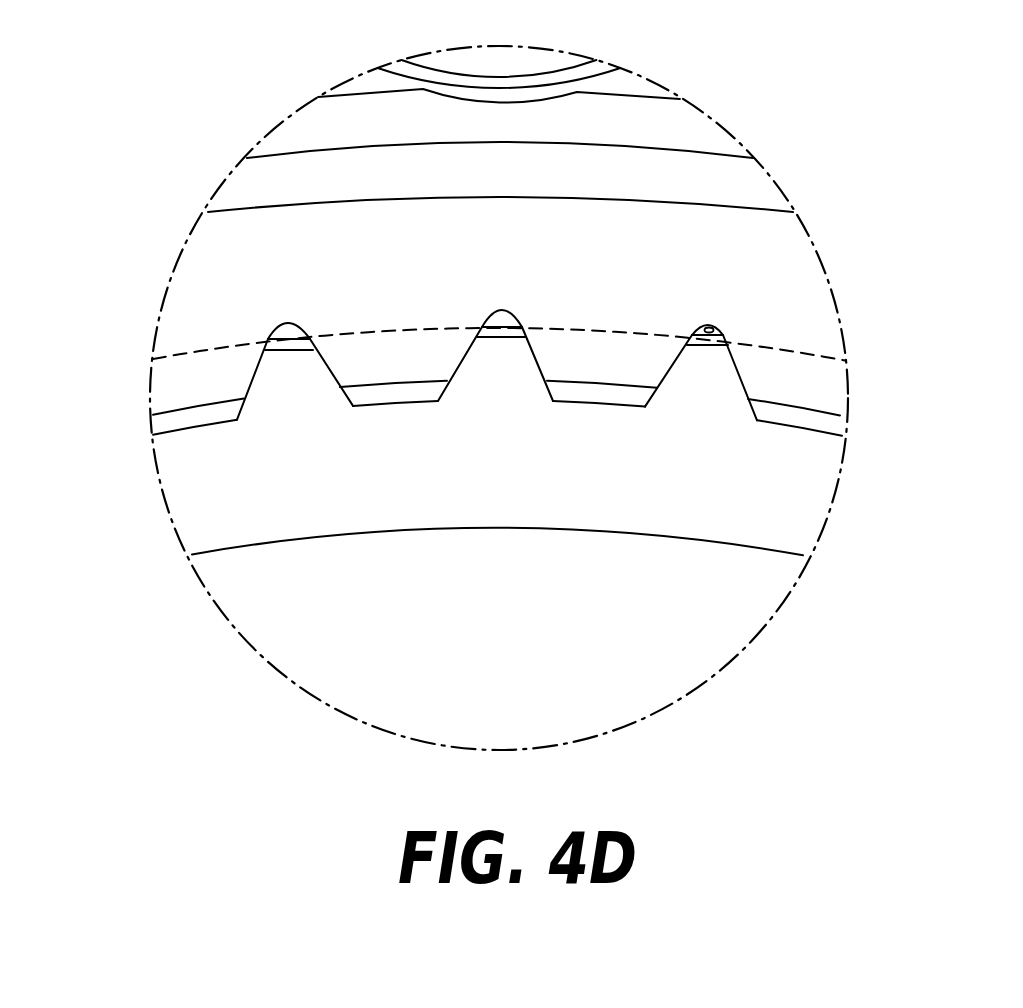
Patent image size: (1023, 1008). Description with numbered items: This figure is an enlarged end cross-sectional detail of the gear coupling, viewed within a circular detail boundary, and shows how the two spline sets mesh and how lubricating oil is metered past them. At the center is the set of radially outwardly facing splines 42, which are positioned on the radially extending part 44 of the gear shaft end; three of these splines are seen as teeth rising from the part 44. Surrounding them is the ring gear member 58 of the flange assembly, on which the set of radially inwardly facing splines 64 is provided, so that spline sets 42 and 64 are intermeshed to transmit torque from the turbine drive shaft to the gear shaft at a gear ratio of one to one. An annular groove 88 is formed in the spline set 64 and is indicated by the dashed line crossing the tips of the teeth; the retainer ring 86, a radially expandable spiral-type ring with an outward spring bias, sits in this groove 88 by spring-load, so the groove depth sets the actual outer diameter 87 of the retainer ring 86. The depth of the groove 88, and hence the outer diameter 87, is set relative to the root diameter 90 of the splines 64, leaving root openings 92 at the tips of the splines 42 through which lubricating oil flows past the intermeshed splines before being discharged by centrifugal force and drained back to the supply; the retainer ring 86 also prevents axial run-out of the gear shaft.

The outwardly facing splines 42 is at (277, 389).
The radially extending part 44 is at (193, 478).
The ring gear member 58 is at (797, 279).
The radially inwardly facing splines 64 is at (160, 378).
The retainer ring 86 is at (575, 390).
The outer diameter of retainer ring 87 is at (729, 355).
The annular groove 88 is at (396, 340).
The root diameter 90 is at (702, 328).
The root openings 92 is at (288, 329).